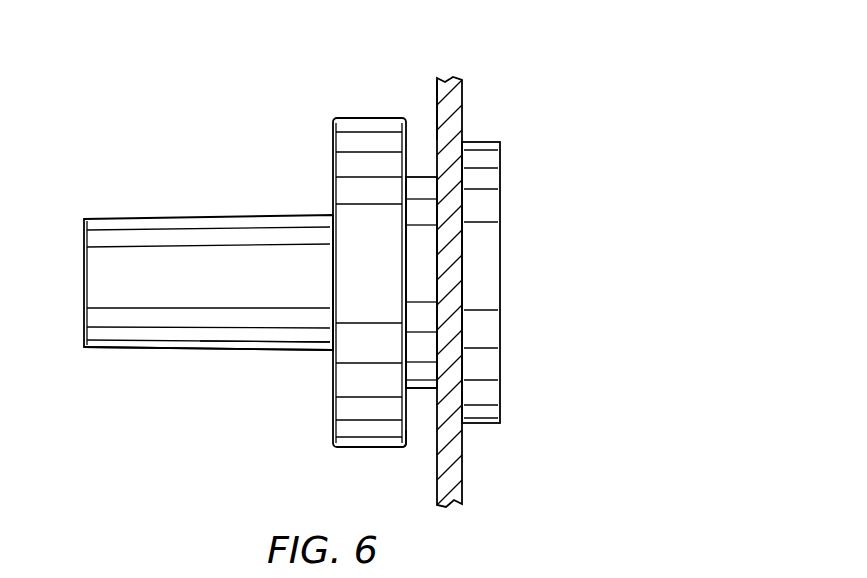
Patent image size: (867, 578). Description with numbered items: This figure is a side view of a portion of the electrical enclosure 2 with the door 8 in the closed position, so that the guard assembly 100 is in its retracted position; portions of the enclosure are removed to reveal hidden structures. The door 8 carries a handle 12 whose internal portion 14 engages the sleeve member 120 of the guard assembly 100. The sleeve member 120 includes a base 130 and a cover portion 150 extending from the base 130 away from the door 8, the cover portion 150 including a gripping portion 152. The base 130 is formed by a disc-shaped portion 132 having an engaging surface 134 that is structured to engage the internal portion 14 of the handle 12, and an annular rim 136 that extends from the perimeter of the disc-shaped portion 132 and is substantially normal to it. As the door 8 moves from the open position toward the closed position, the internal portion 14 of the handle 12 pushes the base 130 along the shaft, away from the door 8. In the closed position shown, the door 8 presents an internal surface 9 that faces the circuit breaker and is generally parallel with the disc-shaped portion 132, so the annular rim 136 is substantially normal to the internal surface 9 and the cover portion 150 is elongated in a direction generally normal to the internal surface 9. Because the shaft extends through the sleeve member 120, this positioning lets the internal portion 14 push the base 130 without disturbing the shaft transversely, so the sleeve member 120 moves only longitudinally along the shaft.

The guard assembly 100 is at (167, 130).
The sleeve member 120 is at (130, 217).
The cover portion 150 is at (183, 355).
The gripping portion 152 is at (250, 350).
The base 130 is at (377, 102).
The disc-shaped portion 132 is at (405, 102).
The engaging surface 134 is at (417, 437).
The annular rim 136 is at (353, 447).
The internal portion 14 is at (422, 390).
The door 8 is at (465, 97).
The internal surface 9 is at (437, 97).
The handle 12 is at (490, 137).
The electrical enclosure 2 is at (577, 309).